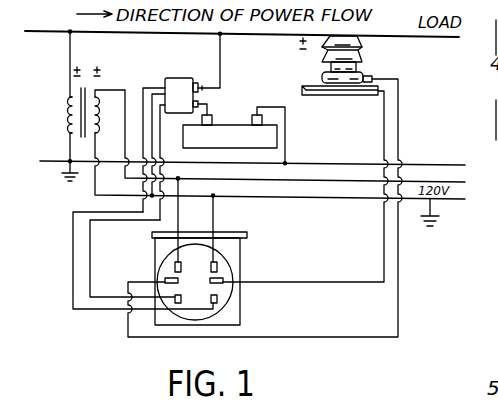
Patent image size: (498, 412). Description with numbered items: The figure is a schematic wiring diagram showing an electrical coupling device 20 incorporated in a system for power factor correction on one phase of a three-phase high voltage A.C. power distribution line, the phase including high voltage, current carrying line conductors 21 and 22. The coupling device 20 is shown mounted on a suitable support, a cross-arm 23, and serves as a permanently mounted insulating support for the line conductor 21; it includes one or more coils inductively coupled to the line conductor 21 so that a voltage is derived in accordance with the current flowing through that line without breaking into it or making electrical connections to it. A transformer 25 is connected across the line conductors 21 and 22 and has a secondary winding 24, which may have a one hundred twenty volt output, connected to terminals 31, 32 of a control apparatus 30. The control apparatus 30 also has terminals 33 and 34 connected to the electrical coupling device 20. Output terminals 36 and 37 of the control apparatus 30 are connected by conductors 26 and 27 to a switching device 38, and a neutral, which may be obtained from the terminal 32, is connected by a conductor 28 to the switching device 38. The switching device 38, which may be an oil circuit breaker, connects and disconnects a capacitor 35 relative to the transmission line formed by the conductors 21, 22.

The electrical coupling device 20 is at (380, 66).
The line conductor 21 is at (37, 36).
The line conductor 22 is at (45, 163).
The cross-arm 23 is at (312, 99).
The secondary winding 24 is at (104, 126).
The transformer 25 is at (88, 80).
The conductor 26 is at (90, 265).
The conductor 27 is at (72, 265).
The conductor 28 is at (157, 85).
The control apparatus 30 is at (238, 228).
The terminal 31 is at (175, 264).
The terminal 32 is at (218, 262).
The terminal 33 is at (178, 281).
The terminal 34 is at (222, 280).
The capacitor 35 is at (229, 124).
The output terminal 36 is at (181, 297).
The output terminal 37 is at (218, 299).
The switching device 38 is at (183, 77).